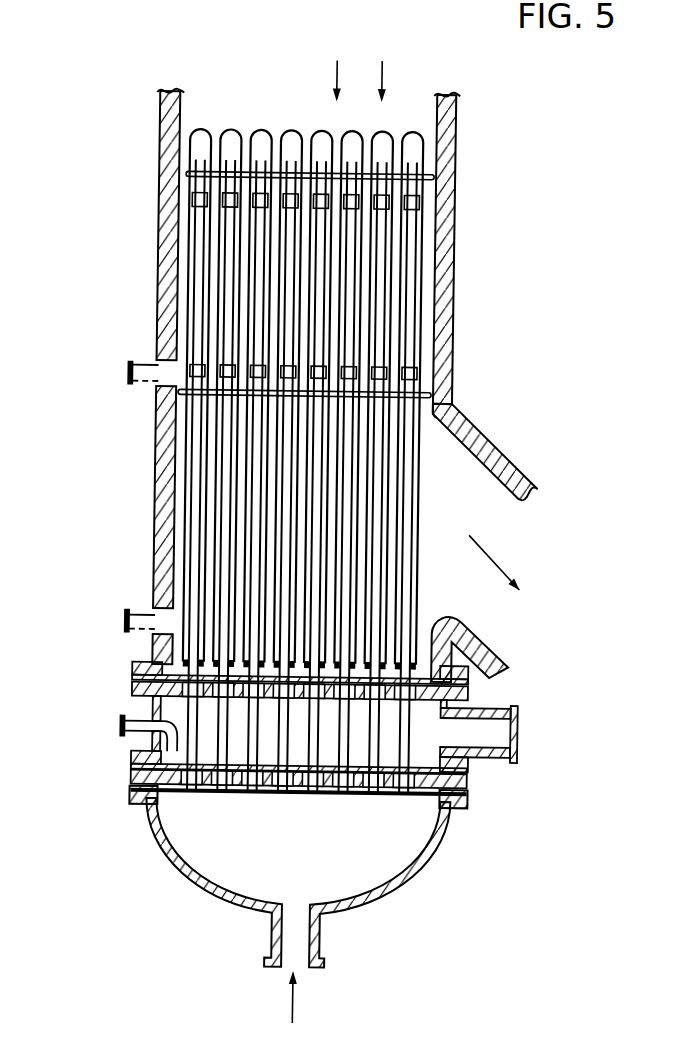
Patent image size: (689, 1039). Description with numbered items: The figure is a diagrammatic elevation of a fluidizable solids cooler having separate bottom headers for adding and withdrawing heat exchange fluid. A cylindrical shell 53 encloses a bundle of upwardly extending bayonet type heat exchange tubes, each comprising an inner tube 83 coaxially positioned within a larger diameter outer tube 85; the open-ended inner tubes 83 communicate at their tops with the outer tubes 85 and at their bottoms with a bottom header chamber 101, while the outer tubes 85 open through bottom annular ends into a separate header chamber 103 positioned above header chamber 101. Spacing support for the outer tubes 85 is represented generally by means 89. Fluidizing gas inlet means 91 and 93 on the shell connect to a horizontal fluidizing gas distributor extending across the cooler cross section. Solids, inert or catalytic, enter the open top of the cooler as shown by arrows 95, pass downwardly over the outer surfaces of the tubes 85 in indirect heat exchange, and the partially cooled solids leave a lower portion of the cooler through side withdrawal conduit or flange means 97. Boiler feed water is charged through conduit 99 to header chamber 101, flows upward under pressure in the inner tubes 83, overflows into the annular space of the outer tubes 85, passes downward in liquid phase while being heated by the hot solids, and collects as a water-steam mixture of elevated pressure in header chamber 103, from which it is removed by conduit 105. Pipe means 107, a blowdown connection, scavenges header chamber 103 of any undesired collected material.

The shell 53 is at (157, 263).
The inner tube 83 is at (414, 502).
The outer tube 85 is at (420, 449).
The spacing support means 89 is at (446, 412).
The fluidizing gas inlet means 91 is at (148, 614).
The fluidizing gas inlet means 93 is at (153, 388).
The arrows 95 is at (378, 62).
The side withdrawal conduit or flange means 97 is at (533, 496).
The conduit 99 is at (322, 968).
The header chamber 101 is at (320, 872).
The header chamber 103 is at (329, 738).
The conduit 105 is at (511, 733).
The pipe means 107 is at (128, 738).